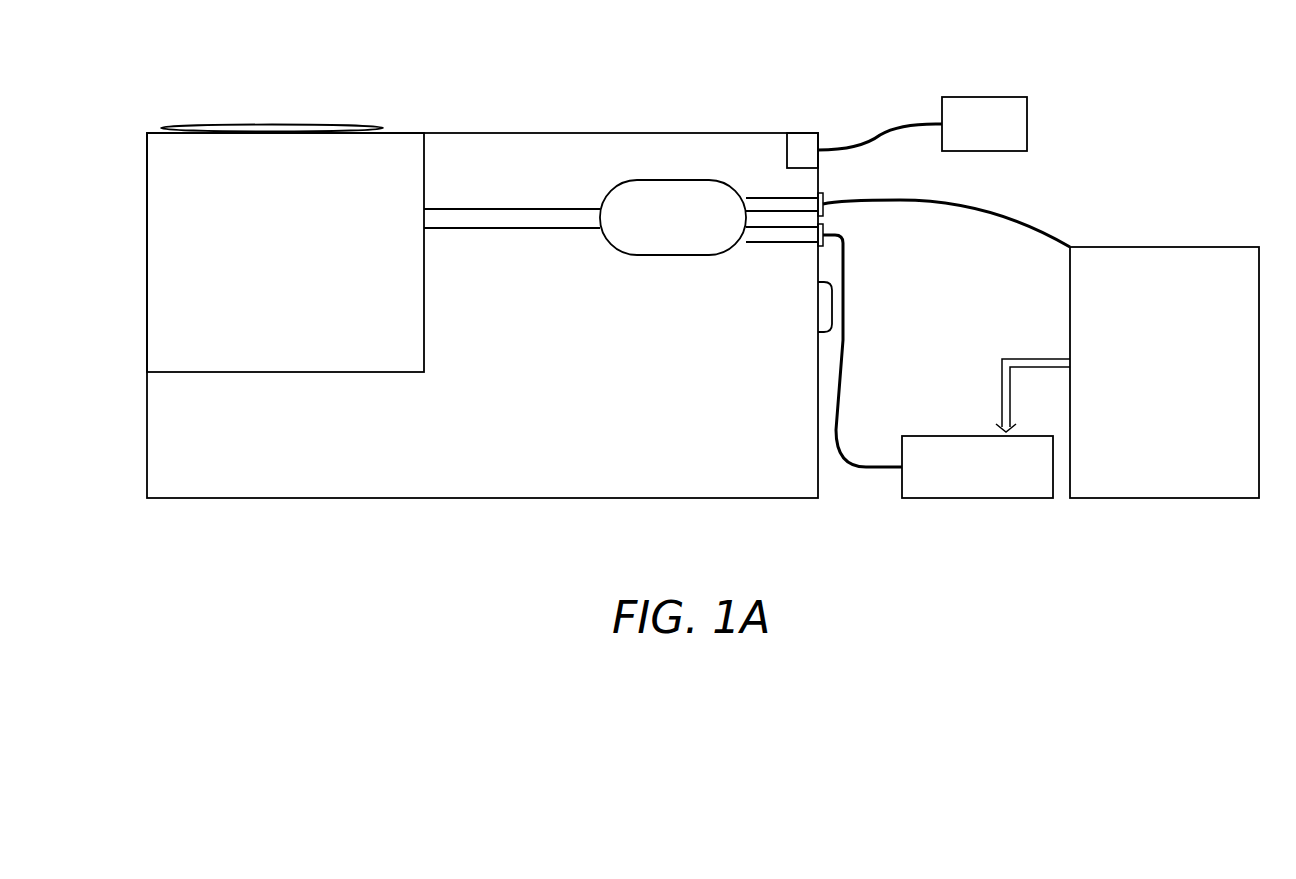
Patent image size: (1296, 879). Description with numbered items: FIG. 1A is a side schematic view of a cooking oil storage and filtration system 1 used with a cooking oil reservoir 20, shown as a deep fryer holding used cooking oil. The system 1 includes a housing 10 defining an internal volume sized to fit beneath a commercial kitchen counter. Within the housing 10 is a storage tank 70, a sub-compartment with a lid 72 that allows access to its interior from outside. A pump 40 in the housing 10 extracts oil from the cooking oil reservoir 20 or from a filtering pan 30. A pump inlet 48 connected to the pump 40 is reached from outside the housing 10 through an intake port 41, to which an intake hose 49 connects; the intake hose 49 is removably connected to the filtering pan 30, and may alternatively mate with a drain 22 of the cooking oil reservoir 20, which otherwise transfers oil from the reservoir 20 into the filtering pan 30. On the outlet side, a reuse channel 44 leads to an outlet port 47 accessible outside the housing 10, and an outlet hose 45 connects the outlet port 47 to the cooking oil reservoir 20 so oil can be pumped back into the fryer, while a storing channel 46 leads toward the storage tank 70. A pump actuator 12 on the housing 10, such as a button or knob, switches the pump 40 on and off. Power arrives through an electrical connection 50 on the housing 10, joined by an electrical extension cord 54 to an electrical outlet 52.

The cooking oil storage and filtration system 1 is at (505, 60).
The housing 10 is at (160, 455).
The pump actuator 12 is at (832, 308).
The cooking oil reservoir 20 is at (1214, 245).
The drain 22 is at (1035, 357).
The filtering pan 30 is at (945, 434).
The pump 40 is at (682, 178).
The intake port 41 is at (823, 232).
The reuse channel 44 is at (800, 197).
The outlet hose 45 is at (1016, 215).
The storing channel 46 is at (540, 207).
The outlet port 47 is at (823, 208).
The pump inlet 48 is at (798, 242).
The intake hose 49 is at (846, 274).
The electrical connection 50 is at (800, 142).
The electrical outlet 52 is at (991, 134).
The electrical extension cord 54 is at (895, 125).
The storage tank 70 is at (160, 242).
The lid 72 is at (228, 126).